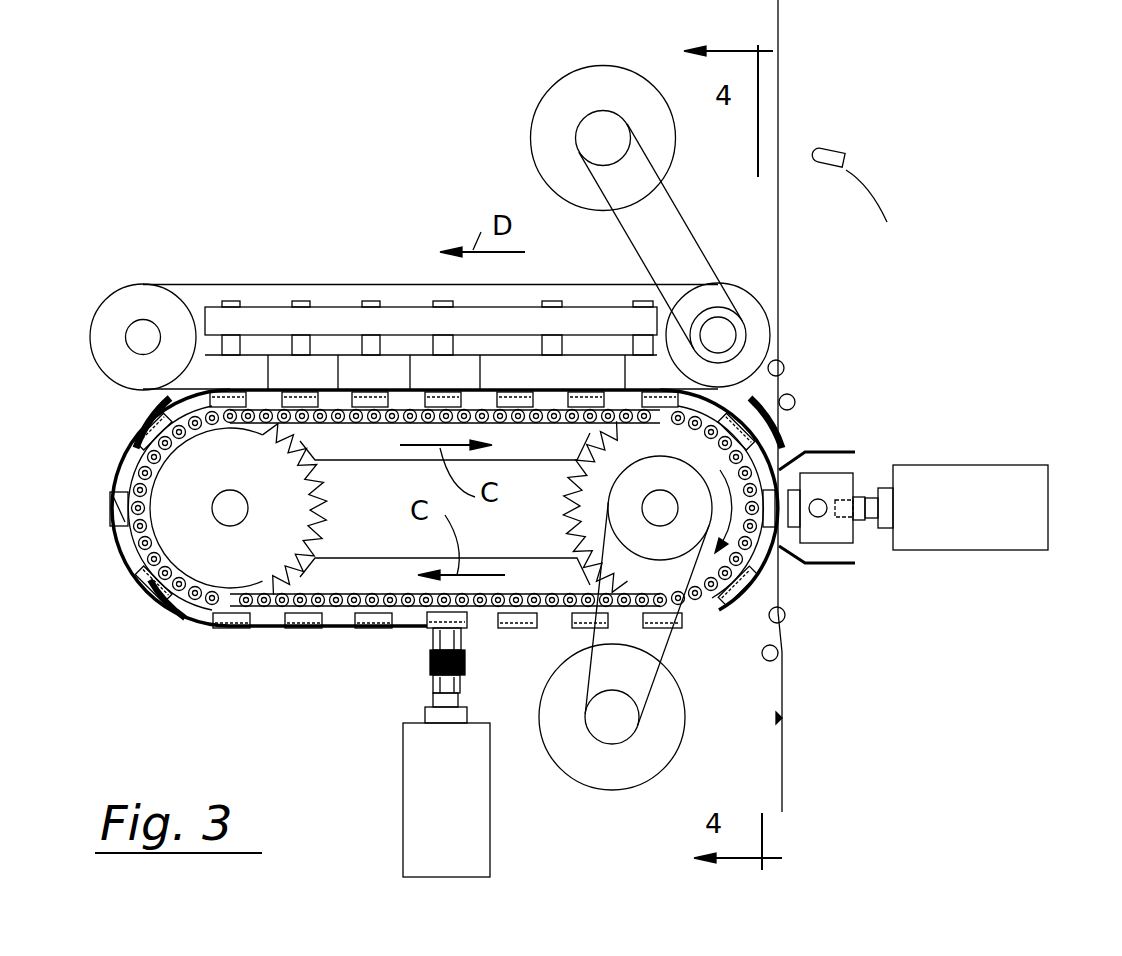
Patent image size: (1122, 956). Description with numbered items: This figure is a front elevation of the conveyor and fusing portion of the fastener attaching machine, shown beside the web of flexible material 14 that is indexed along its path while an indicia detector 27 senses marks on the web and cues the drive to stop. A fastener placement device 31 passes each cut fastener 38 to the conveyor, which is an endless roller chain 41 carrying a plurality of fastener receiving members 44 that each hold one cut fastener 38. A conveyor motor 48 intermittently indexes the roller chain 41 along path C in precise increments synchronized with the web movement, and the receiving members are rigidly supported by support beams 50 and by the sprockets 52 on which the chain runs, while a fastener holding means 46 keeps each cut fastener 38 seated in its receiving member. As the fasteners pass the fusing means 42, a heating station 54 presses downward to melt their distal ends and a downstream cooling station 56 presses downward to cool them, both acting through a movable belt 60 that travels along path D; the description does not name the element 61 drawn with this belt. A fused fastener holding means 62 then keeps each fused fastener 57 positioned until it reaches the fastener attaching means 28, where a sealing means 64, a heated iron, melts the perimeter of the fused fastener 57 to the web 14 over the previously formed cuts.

The web of flexible material 14 is at (784, 326).
The indicia detector 27 is at (876, 200).
The fastener attaching means 28 is at (992, 466).
The fastener placement device 31 is at (408, 778).
The cut fastener 38 is at (124, 500).
The endless roller chain 41 is at (116, 546).
The fusing means 42 is at (122, 290).
The fastener receiving members 44 is at (132, 452).
The fastener holding means 46 is at (132, 574).
The conveyor motor 48 is at (660, 762).
The support beams 50 is at (352, 450).
The sprockets 52 is at (266, 472).
The heating station 54 is at (440, 300).
The cooling station 56 is at (578, 292).
The fused fastener 57 is at (762, 438).
The movable belt 60 is at (205, 285).
The pulley 61 is at (553, 86).
The fused fastener holding means 62 is at (770, 462).
The sealing means 64 is at (848, 548).